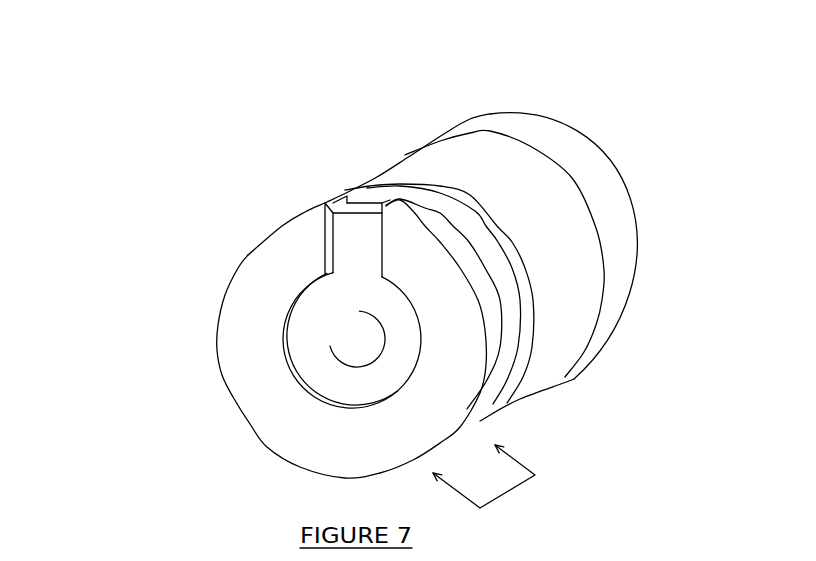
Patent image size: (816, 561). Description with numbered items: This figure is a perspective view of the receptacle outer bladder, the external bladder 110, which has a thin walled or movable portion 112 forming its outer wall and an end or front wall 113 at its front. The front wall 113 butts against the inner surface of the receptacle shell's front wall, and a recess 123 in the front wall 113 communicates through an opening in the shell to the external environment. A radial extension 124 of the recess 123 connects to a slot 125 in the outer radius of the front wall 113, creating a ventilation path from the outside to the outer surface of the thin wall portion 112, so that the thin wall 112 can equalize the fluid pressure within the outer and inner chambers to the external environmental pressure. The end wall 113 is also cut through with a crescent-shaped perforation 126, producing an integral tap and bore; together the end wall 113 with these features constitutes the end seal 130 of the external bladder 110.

The external bladder 110 is at (353, 118).
The thin walled or movable portion 112 is at (453, 172).
The front wall 113 is at (250, 323).
The recess 123 is at (373, 380).
The radial extension 124 is at (357, 240).
The slot 125 is at (368, 208).
The crescent-shaped perforation 126 is at (337, 360).
The end seal 130 is at (490, 482).